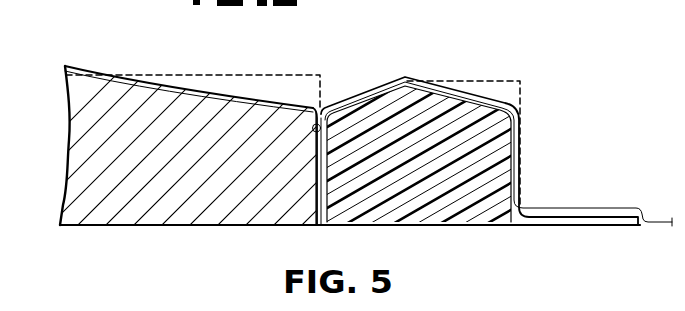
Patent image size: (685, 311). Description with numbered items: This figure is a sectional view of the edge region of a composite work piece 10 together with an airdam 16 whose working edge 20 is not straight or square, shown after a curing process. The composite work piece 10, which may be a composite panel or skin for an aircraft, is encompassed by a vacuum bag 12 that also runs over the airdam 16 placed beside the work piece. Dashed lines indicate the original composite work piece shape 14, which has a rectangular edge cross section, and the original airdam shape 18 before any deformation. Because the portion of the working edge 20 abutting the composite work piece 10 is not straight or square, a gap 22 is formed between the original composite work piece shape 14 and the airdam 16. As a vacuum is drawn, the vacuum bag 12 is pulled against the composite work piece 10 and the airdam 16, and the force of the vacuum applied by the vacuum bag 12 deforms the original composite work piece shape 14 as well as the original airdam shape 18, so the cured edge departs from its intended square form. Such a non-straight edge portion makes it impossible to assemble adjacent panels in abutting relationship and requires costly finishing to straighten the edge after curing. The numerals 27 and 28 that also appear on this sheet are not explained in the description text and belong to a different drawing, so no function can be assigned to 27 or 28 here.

The composite work piece 10 is at (107, 142).
The vacuum bag 12 is at (85, 68).
The original composite work piece shape 14 is at (273, 75).
The airdam 16 is at (433, 115).
The original airdam shape 18 is at (520, 92).
The working edge 20 is at (337, 107).
The gap 22 is at (330, 84).
The element 27 is at (567, 310).
The element 28 is at (487, 310).